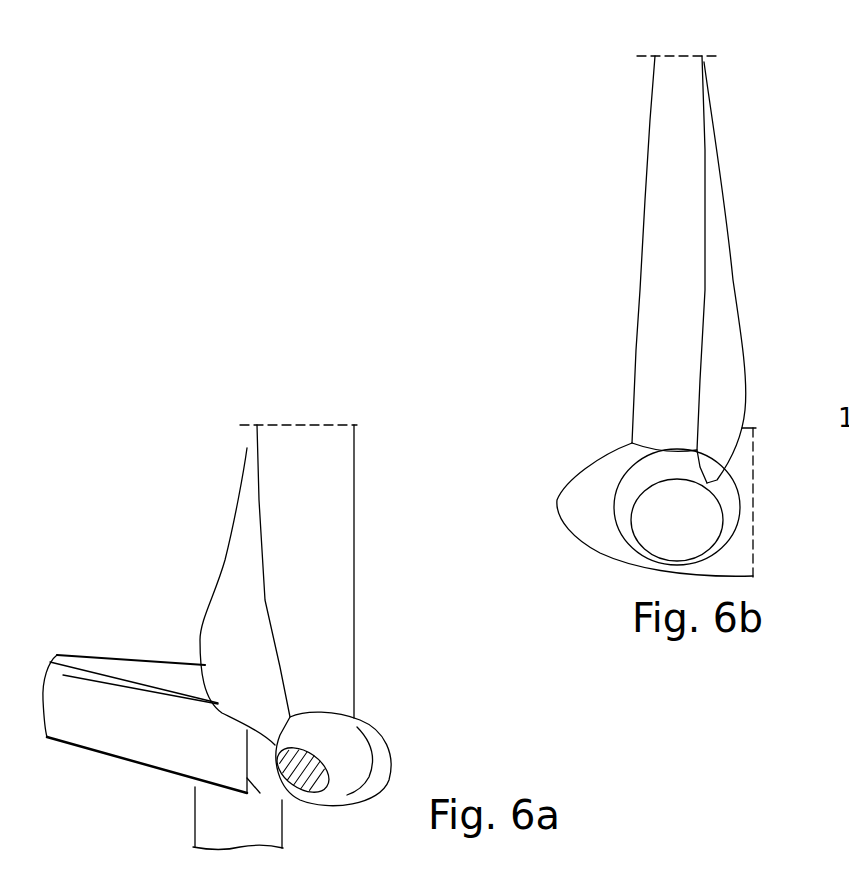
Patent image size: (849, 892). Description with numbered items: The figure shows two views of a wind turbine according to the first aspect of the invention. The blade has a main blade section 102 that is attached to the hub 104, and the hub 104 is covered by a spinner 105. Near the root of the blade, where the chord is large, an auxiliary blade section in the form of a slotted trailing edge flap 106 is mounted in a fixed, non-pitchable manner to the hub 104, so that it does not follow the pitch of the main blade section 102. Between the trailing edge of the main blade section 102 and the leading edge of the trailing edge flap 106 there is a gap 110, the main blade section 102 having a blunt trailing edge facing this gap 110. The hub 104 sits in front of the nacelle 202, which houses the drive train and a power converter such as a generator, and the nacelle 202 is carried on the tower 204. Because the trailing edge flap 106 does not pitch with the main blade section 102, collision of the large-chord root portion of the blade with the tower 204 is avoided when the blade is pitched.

In FIG. 6A, the main blade section 102 is at (337, 600).
In FIG. 6B, the main blade section 102 is at (657, 303).
In FIG. 6A, the hub 104 is at (345, 752).
In FIG. 6B, the hub 104 is at (622, 502).
In FIG. 6A, the spinner 105 is at (390, 763).
In FIG. 6B, the spinner 105 is at (575, 505).
In FIG. 6A, the trailing edge flap 106 is at (227, 612).
In FIG. 6B, the trailing edge flap 106 is at (727, 352).
In FIG. 6A, the gap 110 is at (247, 442).
In FIG. 6A, the nacelle 202 is at (163, 739).
In FIG. 6A, the tower 204 is at (210, 818).